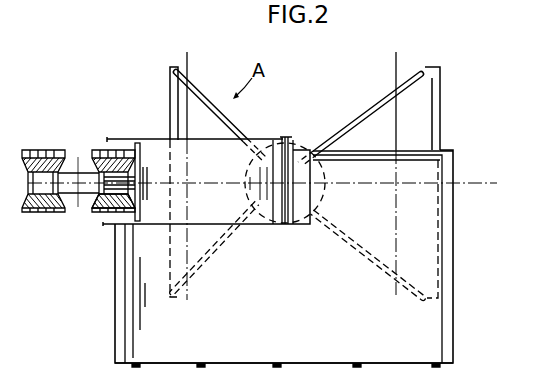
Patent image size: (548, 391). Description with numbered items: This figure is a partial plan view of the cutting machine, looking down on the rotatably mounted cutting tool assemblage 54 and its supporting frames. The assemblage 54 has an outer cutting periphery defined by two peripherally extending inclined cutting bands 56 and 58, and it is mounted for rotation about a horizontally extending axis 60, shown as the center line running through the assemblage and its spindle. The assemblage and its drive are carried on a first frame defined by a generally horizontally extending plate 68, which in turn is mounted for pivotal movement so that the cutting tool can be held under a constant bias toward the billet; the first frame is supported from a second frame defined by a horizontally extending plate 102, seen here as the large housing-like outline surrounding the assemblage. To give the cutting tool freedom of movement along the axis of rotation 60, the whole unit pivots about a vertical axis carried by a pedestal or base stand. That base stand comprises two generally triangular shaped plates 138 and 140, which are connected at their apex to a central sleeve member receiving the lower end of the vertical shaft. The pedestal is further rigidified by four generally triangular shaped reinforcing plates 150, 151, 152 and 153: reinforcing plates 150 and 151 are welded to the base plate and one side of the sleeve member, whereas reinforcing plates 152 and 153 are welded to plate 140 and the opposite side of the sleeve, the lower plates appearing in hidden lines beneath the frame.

The cutting tool assemblage 54 is at (96, 148).
The inclined cutting band 56 is at (122, 152).
The inclined cutting band 58 is at (105, 202).
The axis of rotation 60 is at (190, 164).
The horizontally extending plate 68 is at (432, 347).
The horizontally extending plate 102 is at (454, 323).
The triangular shaped plate 138 is at (432, 102).
The triangular shaped plate 140 is at (177, 91).
The reinforcing plate 150 is at (380, 109).
The reinforcing plate 151 is at (383, 259).
The reinforcing plate 152 is at (207, 265).
The reinforcing plate 153 is at (201, 94).